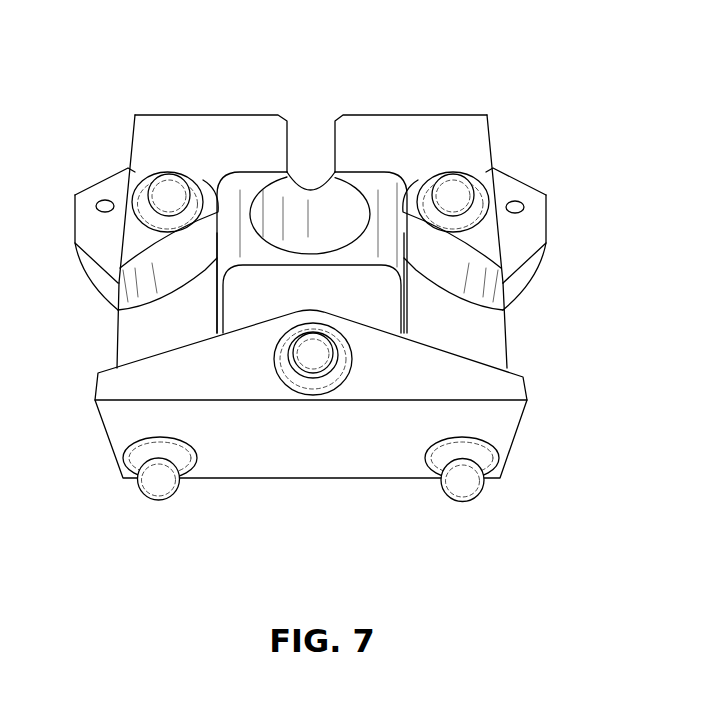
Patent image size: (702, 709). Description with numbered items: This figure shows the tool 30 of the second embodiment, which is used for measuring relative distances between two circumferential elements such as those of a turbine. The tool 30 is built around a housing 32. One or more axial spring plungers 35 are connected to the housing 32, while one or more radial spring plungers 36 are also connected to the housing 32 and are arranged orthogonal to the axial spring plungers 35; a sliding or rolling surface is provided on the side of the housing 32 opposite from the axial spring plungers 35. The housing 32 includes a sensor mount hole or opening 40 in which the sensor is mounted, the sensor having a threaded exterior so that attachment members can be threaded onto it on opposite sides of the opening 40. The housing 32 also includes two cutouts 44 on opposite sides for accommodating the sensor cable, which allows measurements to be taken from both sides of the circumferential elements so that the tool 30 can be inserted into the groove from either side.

The tool 30 is at (363, 62).
The housing 32 is at (578, 295).
The axial spring plungers 35 is at (155, 192).
The radial spring plungers 36 is at (156, 483).
The sensor mount hole or opening 40 is at (318, 167).
The cutouts 44 is at (150, 339).